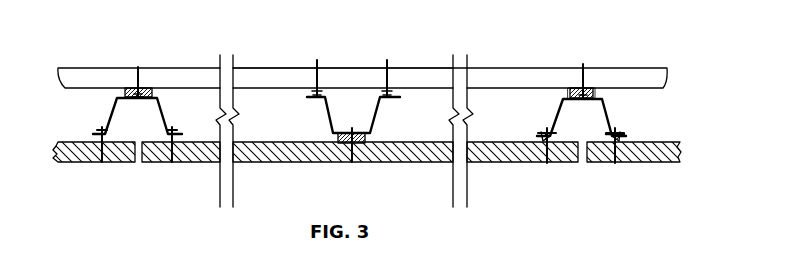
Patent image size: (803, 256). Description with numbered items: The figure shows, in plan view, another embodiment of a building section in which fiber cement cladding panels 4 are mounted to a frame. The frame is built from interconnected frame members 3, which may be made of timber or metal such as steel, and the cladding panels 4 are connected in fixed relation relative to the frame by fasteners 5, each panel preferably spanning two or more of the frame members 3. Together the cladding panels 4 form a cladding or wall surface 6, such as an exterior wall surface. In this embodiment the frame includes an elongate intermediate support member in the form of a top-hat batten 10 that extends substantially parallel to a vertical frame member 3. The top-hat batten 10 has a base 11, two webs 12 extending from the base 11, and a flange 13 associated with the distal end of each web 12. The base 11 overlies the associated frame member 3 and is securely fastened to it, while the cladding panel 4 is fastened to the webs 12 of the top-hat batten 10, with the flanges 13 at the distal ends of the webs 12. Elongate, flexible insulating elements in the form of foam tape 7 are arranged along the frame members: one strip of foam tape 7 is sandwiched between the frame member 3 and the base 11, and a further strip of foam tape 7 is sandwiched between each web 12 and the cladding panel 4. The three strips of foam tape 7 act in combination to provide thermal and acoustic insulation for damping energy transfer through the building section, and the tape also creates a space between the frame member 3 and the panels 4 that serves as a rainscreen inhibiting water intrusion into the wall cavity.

The frame member 3 is at (638, 75).
The fiber cement cladding panel 4 is at (183, 142).
The fastener 5 is at (138, 67).
The wall surface 6 is at (210, 163).
The foam tape 7 is at (98, 139).
The top-hat batten 10 is at (557, 120).
The base 11 is at (565, 97).
The web 12 is at (558, 132).
The flange 13 is at (625, 136).